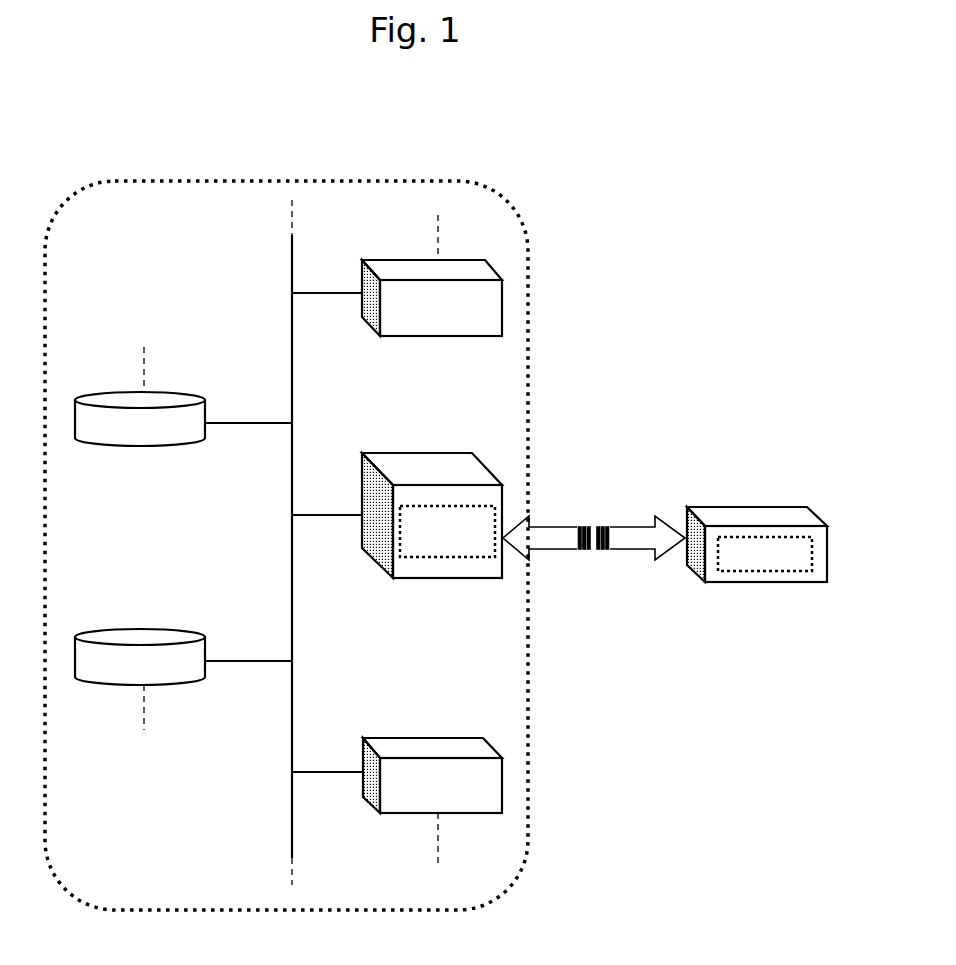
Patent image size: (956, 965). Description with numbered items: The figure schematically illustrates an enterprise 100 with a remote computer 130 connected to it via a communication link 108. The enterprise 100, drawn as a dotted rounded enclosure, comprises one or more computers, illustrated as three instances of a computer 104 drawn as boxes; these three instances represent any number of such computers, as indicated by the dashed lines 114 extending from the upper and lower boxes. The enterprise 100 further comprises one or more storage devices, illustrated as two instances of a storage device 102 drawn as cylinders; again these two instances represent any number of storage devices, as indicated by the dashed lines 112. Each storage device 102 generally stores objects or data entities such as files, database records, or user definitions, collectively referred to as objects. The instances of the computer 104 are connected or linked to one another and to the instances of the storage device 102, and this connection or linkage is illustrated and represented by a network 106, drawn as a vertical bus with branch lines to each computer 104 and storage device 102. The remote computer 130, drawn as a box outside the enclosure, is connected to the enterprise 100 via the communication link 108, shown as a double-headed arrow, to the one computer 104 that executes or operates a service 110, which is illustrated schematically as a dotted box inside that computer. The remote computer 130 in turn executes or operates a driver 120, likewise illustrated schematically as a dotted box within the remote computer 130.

The enterprise 100 is at (356, 165).
The storage device 102 is at (170, 447).
The computer 104 is at (467, 336).
The network 106 is at (232, 423).
The communication link 108 is at (600, 508).
The service 110 is at (437, 545).
The dashed lines 112 is at (145, 372).
The dashed lines 114 is at (437, 250).
The driver 120 is at (747, 562).
The remote computer 130 is at (738, 505).